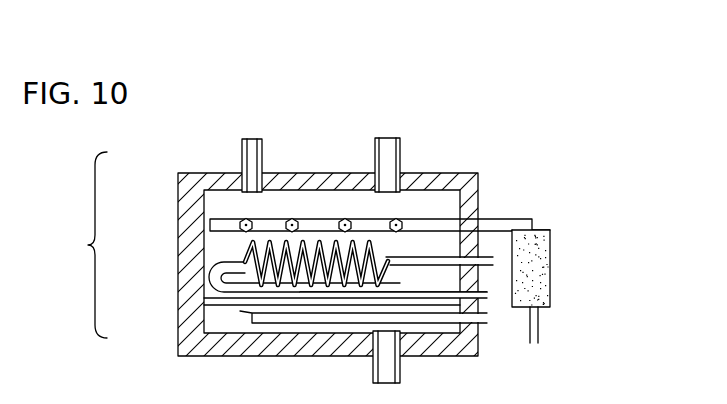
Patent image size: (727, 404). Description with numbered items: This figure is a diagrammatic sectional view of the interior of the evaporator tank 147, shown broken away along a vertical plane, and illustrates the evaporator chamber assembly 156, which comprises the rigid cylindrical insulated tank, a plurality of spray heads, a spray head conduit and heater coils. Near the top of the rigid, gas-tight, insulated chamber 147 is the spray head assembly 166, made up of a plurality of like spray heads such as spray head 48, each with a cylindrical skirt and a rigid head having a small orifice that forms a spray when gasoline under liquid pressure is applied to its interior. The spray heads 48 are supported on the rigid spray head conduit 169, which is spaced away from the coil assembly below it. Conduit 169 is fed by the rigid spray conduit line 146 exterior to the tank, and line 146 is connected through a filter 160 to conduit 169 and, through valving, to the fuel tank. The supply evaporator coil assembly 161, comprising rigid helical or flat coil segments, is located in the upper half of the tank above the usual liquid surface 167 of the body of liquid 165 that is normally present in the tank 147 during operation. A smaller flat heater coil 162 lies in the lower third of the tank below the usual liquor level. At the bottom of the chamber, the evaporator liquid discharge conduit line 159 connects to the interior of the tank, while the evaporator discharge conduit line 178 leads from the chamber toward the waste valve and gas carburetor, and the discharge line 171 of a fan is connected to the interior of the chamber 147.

The evaporator tank 147 is at (210, 170).
The spray head assembly 166 is at (262, 216).
The discharge line of fan 171 is at (253, 147).
The evaporator discharge conduit line 178 is at (388, 137).
The evaporator liquid discharge conduit line 159 is at (404, 366).
The spray head conduit 169 is at (437, 223).
The spray head 48 is at (398, 218).
The filter 160 is at (541, 270).
The spray conduit line 146 is at (537, 320).
The supply evaporator coil assembly 161 is at (208, 263).
The liquid surface 167 is at (442, 303).
The body of liquid 165 is at (240, 325).
The heater coil 162 is at (250, 318).
The evaporator chamber assembly 156 is at (69, 245).